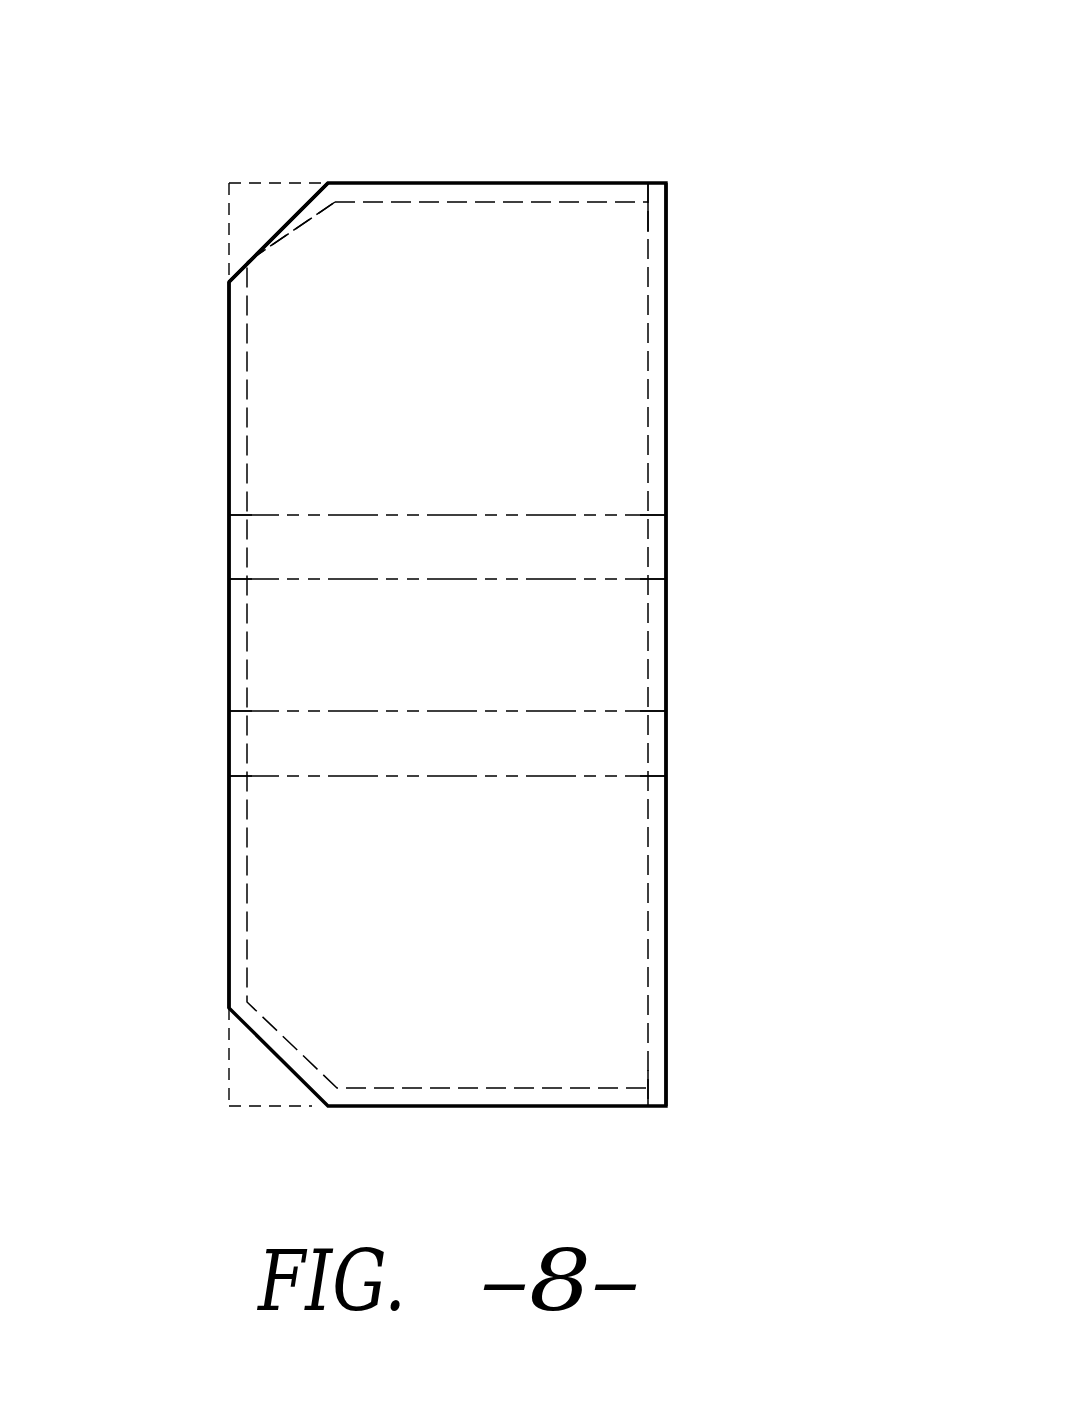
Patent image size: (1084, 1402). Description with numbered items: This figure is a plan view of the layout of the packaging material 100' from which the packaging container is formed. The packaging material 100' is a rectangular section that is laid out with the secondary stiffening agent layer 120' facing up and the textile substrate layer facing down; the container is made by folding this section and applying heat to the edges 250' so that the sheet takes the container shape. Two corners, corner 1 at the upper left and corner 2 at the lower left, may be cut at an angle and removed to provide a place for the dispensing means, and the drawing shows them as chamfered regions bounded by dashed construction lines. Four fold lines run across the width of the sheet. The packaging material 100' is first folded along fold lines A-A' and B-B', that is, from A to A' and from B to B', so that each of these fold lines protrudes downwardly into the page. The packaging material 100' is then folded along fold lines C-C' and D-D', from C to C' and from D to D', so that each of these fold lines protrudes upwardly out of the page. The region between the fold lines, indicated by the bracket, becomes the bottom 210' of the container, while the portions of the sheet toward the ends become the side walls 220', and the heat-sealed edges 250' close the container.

The packaging material 100' is at (560, 567).
The secondary stiffening agent layer 120' is at (215, 259).
The edges 250' is at (175, 645).
The side walls 220' is at (704, 644).
The bottom 210' is at (840, 643).
The corner 1 is at (228, 196).
The corner 2 is at (230, 1090).
The fold line A-A' A is at (184, 514).
The fold line B-B' B is at (183, 779).
The fold line C-C' C is at (184, 576).
The fold line D-D' D is at (185, 708).
The fold line A- A' is at (711, 509).
The fold line B- B' is at (711, 773).
The fold line C- C' is at (711, 574).
The fold line D- D' is at (713, 706).